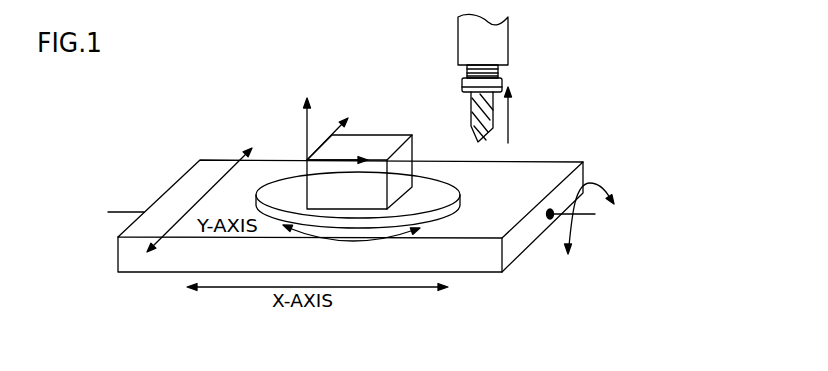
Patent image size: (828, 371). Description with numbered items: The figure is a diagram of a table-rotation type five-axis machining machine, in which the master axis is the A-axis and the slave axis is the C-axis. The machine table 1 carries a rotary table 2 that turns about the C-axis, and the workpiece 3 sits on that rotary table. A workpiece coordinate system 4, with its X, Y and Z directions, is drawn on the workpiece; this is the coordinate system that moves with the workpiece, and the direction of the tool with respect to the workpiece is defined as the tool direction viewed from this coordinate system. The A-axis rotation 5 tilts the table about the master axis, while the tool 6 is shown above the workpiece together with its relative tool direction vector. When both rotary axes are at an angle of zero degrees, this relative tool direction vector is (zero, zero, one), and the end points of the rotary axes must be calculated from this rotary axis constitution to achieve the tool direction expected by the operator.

The machine table 1 is at (345, 216).
The rotary table (C-axis) 2 is at (358, 221).
The workpiece 3 is at (359, 172).
The workpiece coordinate system 4 is at (342, 120).
The A-axis rotation 5 is at (600, 218).
The tool 6 is at (571, 80).